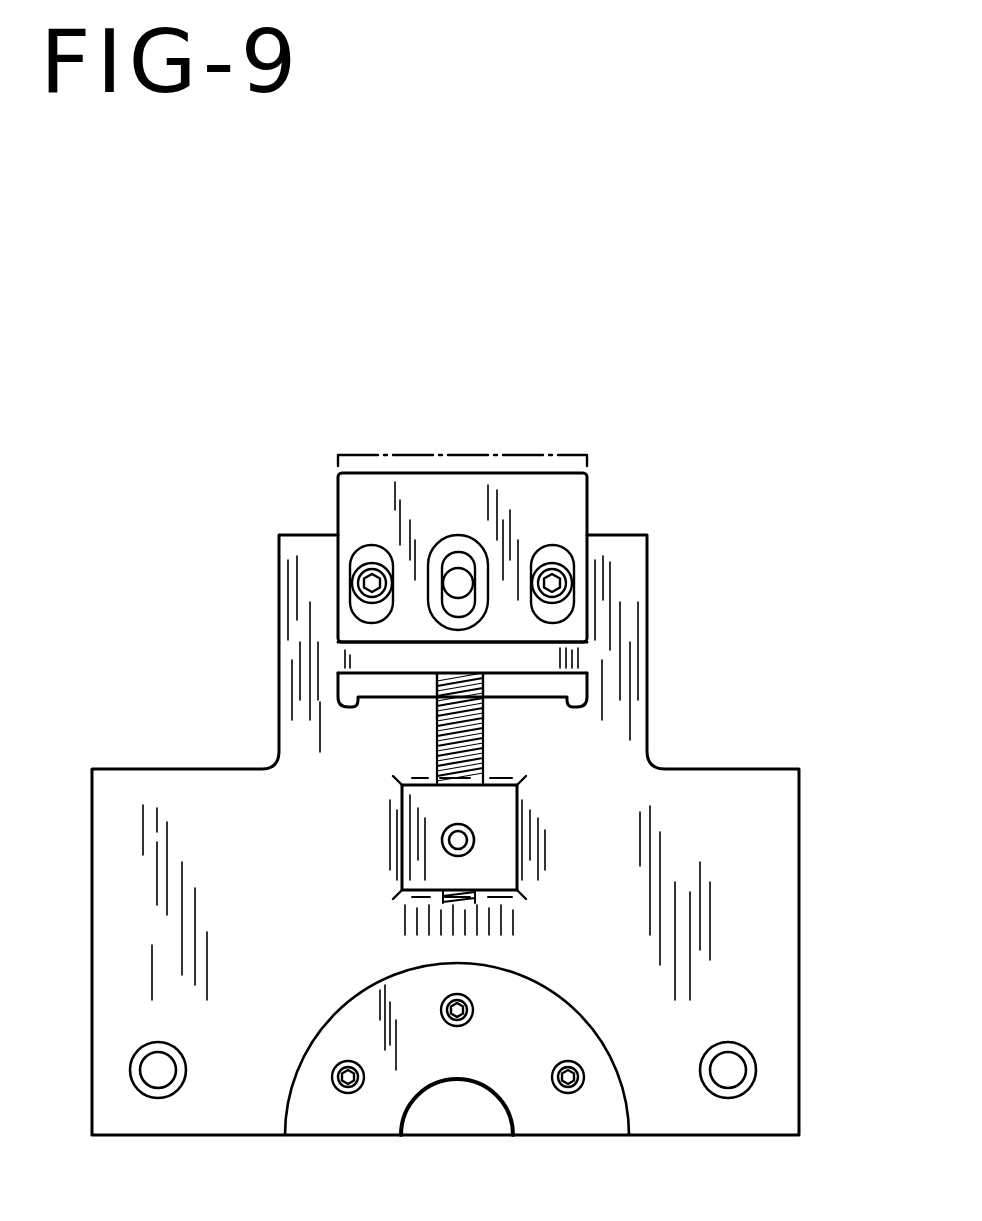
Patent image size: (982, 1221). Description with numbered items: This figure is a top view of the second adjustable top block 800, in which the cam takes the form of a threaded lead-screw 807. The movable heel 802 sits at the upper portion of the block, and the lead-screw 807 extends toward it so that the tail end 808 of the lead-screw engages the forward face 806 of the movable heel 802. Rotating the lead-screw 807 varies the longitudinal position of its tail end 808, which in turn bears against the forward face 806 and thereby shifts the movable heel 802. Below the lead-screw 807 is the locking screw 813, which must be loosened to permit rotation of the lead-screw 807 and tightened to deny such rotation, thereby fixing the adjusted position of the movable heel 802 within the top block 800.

The adjustable top block 800 is at (270, 388).
The movable heel 802 is at (338, 491).
The forward face 806 is at (585, 695).
The threaded lead-screw 807 is at (503, 757).
The tail end 808 is at (430, 715).
The locking screw 813 is at (470, 838).